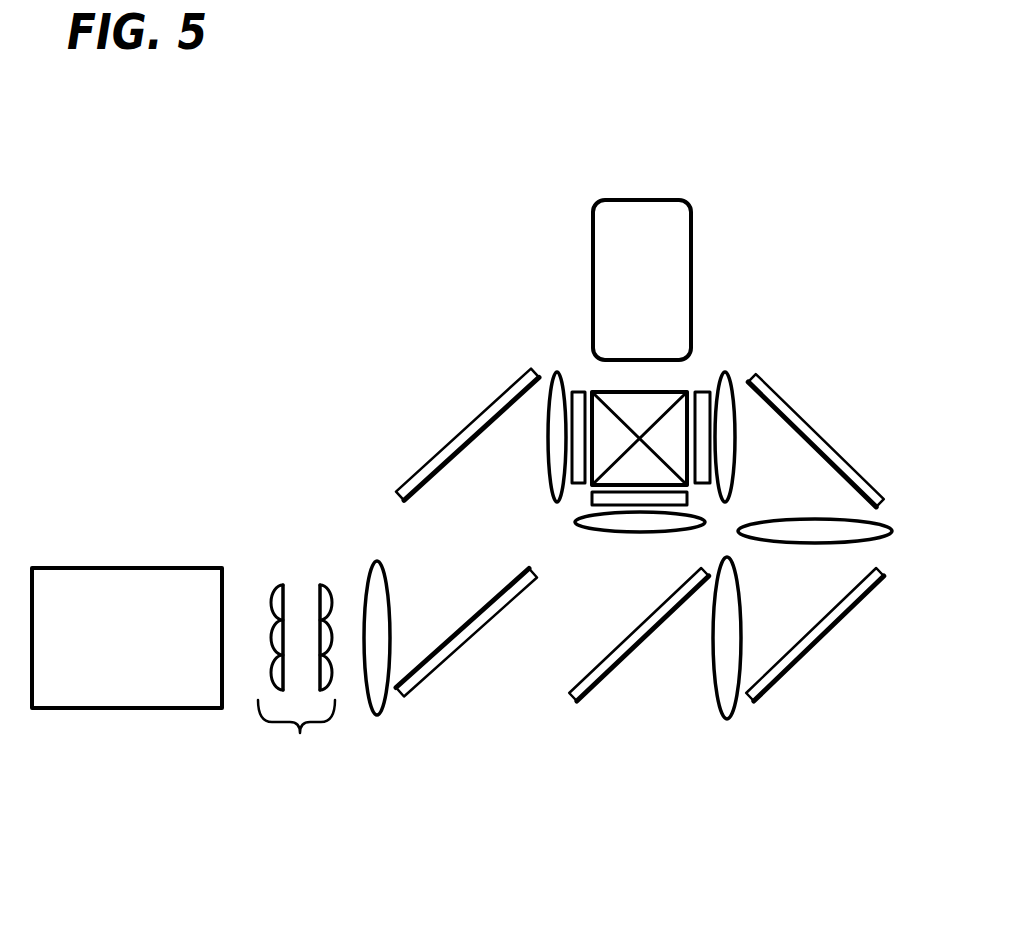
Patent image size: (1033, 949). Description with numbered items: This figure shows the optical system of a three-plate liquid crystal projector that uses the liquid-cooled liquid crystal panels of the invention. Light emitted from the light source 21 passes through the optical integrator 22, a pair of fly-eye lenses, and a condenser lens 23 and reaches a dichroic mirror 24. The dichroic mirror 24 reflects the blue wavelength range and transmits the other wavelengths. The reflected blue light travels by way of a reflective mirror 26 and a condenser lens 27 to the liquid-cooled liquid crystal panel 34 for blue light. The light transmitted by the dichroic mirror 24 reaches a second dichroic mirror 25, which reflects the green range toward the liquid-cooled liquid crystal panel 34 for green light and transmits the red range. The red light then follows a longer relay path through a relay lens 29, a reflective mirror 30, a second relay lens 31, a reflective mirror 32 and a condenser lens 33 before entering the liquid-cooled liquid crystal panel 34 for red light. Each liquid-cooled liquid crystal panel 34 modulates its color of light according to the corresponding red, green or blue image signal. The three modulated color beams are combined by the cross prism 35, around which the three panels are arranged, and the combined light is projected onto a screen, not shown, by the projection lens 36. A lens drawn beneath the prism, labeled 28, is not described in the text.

The light source 21 is at (78, 568).
The optical integrator 22 is at (300, 740).
The condenser lens 23 is at (385, 598).
The dichroic mirror 24 is at (482, 622).
The dichroic mirror 25 is at (620, 660).
The reflective mirror 26 is at (460, 441).
The condenser lens 27 is at (549, 466).
The field lens 28 is at (627, 532).
The relay lens 29 is at (742, 613).
The reflective mirror 30 is at (820, 632).
The relay lens 31 is at (800, 543).
The reflective mirror 32 is at (818, 441).
The condenser lens 33 is at (735, 463).
The liquid-cooled liquid crystal panel 34 is at (577, 390).
The cross prism 35 is at (677, 390).
The projection lens 36 is at (633, 199).